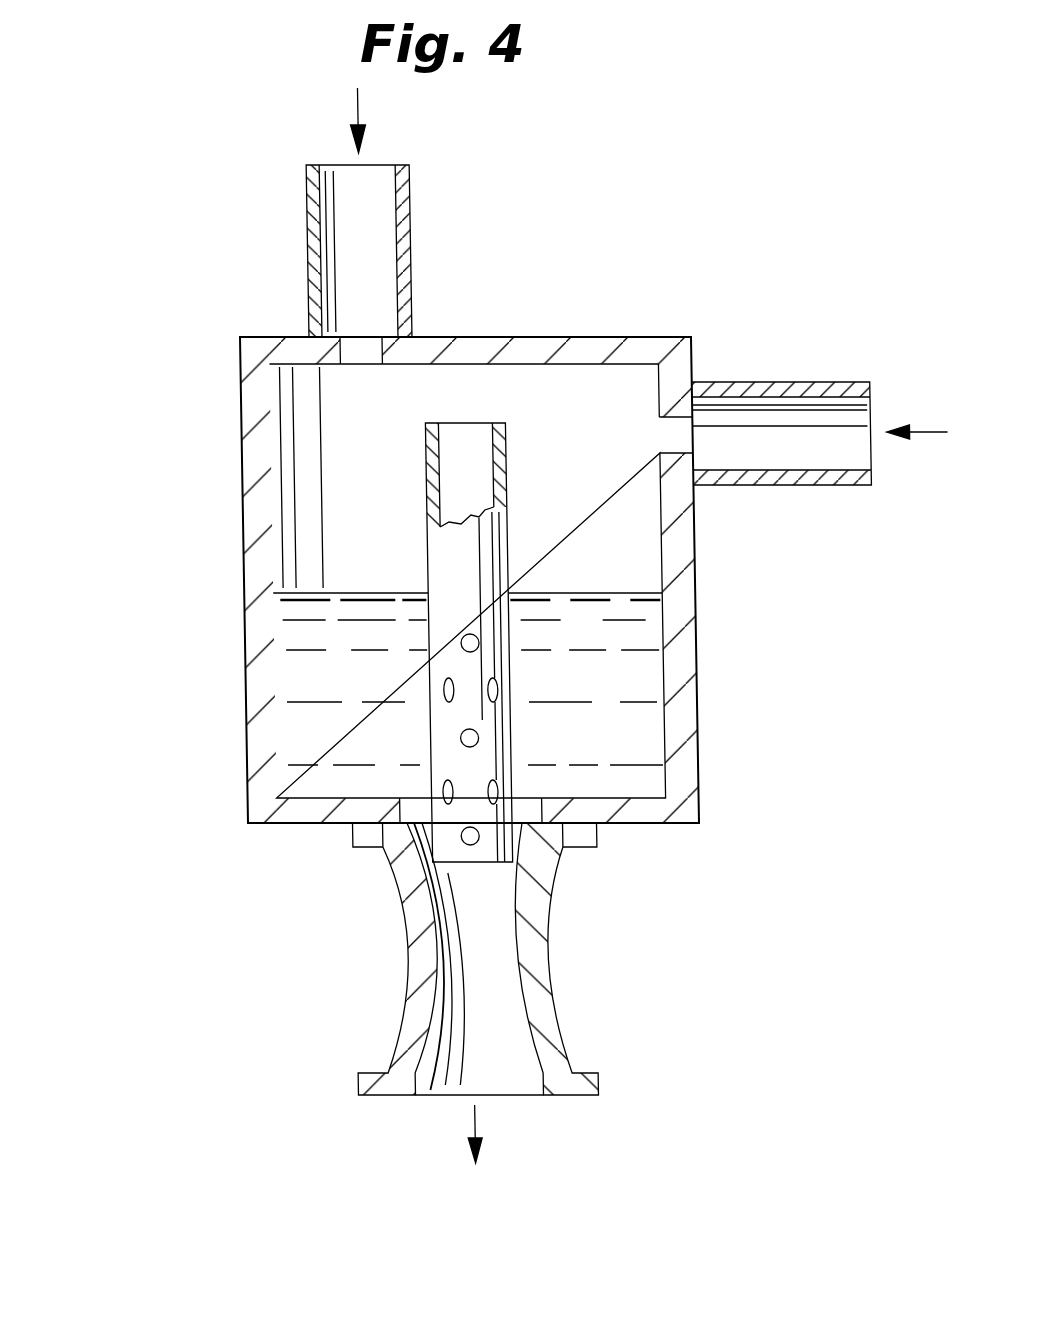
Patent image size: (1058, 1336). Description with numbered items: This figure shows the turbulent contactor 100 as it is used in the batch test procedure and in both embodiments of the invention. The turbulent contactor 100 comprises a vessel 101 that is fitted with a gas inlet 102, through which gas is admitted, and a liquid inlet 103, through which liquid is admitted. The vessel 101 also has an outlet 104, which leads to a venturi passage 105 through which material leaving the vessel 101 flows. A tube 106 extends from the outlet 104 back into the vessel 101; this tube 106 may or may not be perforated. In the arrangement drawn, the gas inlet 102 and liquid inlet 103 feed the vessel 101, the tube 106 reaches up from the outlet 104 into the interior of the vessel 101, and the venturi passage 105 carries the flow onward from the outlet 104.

The turbulent contactor 100 is at (509, 625).
The vessel 101 is at (698, 705).
The gas inlet 102 is at (771, 382).
The liquid inlet 103 is at (416, 232).
The outlet 104 is at (513, 813).
The venturi passage 105 is at (451, 952).
The tube 106 is at (443, 667).